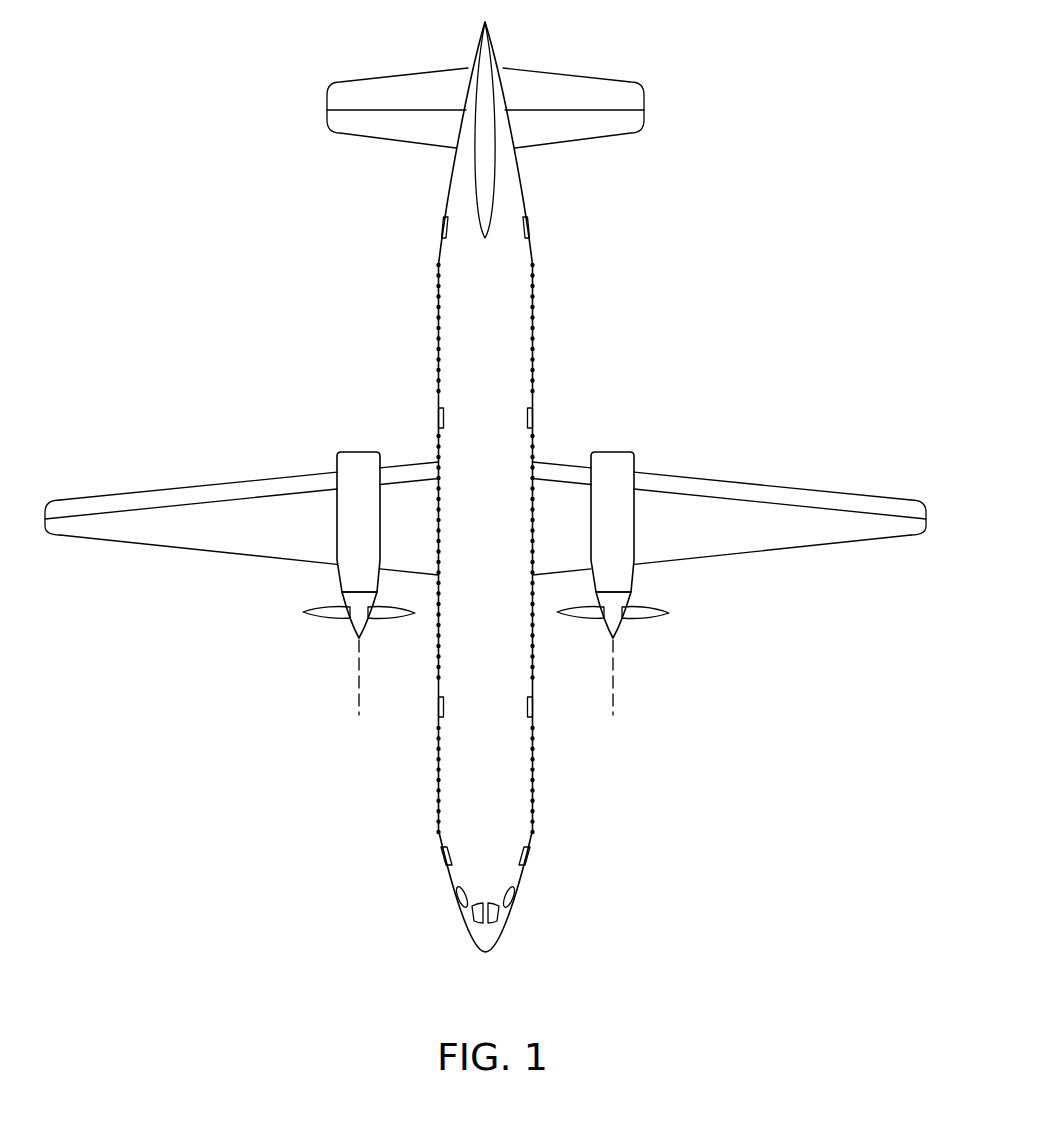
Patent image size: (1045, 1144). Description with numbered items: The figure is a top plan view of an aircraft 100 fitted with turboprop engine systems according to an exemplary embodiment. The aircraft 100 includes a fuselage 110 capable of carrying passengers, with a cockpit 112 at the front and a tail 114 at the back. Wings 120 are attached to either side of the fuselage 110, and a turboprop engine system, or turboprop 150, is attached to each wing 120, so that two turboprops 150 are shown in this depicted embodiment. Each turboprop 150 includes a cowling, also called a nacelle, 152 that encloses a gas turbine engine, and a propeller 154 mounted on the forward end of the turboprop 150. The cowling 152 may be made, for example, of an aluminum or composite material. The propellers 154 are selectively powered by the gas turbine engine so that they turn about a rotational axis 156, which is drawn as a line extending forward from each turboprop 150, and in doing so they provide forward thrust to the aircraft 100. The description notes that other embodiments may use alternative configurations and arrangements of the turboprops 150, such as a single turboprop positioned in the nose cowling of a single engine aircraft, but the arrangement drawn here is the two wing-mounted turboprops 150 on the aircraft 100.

The aircraft 100 is at (280, 300).
The fuselage 110 is at (534, 335).
The cockpit 112 is at (515, 905).
The tail 114 is at (567, 73).
The wings 120 is at (195, 485).
The turboprop engine system 150 is at (360, 450).
The cowling 152 is at (337, 577).
The propeller 154 is at (322, 618).
The rotational axis 156 is at (358, 690).